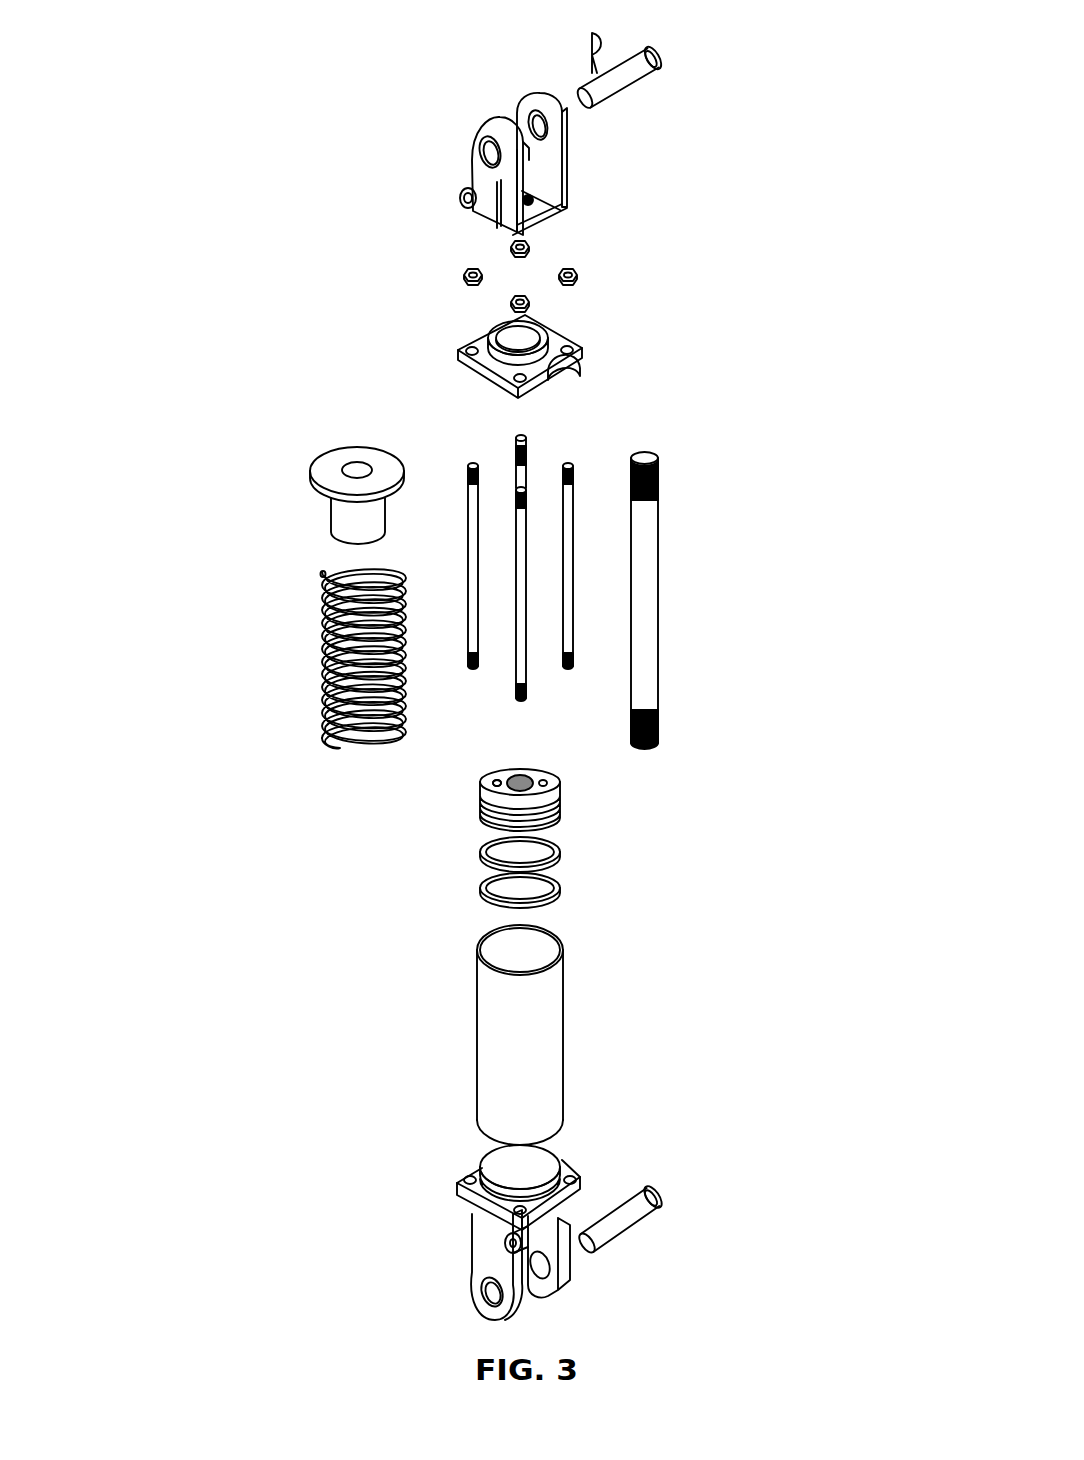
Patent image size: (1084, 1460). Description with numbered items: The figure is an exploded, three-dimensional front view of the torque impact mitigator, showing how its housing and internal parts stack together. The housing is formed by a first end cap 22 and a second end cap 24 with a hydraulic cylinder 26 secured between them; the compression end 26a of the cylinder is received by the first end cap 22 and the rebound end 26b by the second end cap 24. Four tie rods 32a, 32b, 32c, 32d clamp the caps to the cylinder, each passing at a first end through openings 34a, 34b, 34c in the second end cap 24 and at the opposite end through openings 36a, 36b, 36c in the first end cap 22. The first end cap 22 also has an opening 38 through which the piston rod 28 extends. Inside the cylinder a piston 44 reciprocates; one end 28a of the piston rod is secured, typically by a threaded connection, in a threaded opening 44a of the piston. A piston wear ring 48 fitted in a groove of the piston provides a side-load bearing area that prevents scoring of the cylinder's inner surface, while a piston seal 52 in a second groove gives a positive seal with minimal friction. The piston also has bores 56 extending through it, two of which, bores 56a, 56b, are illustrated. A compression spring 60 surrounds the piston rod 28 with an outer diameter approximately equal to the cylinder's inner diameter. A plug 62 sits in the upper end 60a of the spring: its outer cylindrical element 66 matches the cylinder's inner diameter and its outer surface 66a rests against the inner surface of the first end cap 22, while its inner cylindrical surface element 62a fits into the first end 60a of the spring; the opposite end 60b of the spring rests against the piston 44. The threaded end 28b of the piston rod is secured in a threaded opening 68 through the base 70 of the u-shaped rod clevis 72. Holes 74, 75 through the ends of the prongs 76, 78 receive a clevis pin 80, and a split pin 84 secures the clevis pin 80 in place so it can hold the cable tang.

The first end cap 22 is at (519, 357).
The second end cap 24 is at (538, 1216).
The hydraulic cylinder 26 is at (558, 1035).
The compression end 26a is at (557, 938).
The rebound end 26b is at (538, 1133).
The piston rod 28 is at (700, 587).
The piston rod end 28a is at (657, 720).
The threaded piston rod end 28b is at (648, 456).
The tie rod 32a is at (566, 555).
The tie rod 32b is at (522, 645).
The tie rod 32c is at (473, 623).
The tie rod 32d is at (522, 466).
The opening 34a is at (573, 1178).
The opening 34b is at (525, 1205).
The opening 34c is at (468, 1180).
The opening 36a is at (572, 348).
The opening 36b is at (518, 377).
The opening 36c is at (471, 351).
The opening 38 is at (513, 335).
The piston 44 is at (515, 777).
The threaded opening 44a is at (497, 781).
The piston wear ring 48 is at (562, 893).
The piston seal 52 is at (484, 856).
The bores 56 is at (552, 809).
The bore 56a is at (496, 784).
The bore 56b is at (543, 781).
The compression spring 60 is at (326, 693).
The upper end of spring 60a is at (322, 614).
The opposite end of spring 60b is at (360, 750).
The plug 62 is at (317, 465).
The inner cylindrical surface element 62a is at (344, 527).
The outer cylindrical element 66 is at (317, 444).
The outer surface of plug 66a is at (364, 460).
The threaded opening 68 is at (528, 202).
The base 70 is at (520, 147).
The rod clevis 72 is at (457, 151).
The hole 74 is at (490, 147).
The hole 75 is at (535, 126).
The prong 76 is at (470, 207).
The prong 78 is at (564, 123).
The clevis pin 80 is at (625, 72).
The split pin 84 is at (586, 52).